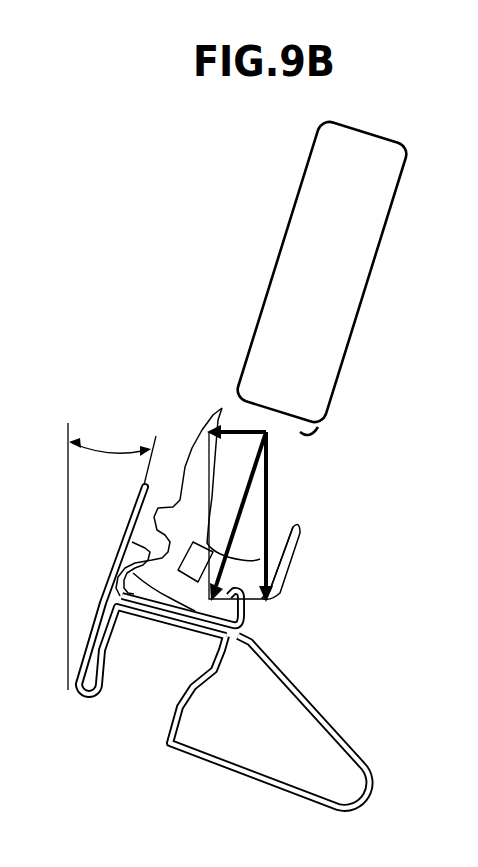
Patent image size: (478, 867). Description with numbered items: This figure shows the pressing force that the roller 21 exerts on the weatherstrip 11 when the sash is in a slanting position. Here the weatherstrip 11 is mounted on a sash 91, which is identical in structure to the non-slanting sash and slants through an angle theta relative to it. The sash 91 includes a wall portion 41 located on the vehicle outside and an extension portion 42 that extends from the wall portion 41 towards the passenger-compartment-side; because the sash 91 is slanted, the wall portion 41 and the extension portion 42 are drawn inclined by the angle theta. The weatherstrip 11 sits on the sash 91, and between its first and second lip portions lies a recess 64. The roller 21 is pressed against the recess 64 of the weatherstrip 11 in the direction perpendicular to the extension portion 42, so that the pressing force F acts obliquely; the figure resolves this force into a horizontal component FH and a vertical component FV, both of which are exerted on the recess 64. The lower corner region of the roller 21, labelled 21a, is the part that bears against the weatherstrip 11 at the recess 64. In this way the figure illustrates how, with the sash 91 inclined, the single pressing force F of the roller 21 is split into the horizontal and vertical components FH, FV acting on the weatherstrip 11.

The weatherstrip 11 is at (193, 433).
The roller 21 is at (304, 170).
The lower corner of plate member 21a is at (292, 430).
The wall portion 41 is at (112, 560).
The extension portion 42 is at (158, 624).
The recess 64 is at (260, 559).
The sash 91 is at (324, 703).
The pressing force F is at (268, 478).
The horizontal component of pressing force FH is at (242, 430).
The vertical component of pressing force FV is at (268, 500).
The angle theta is at (112, 555).